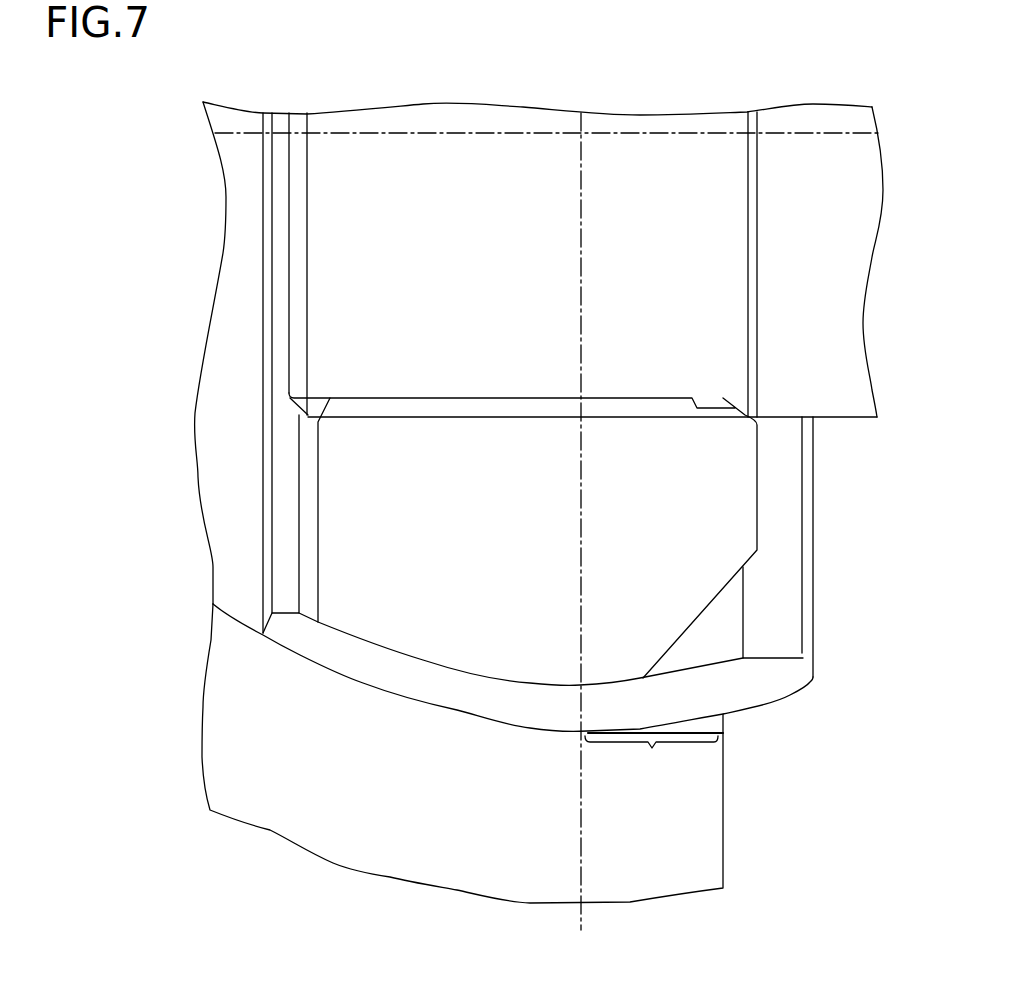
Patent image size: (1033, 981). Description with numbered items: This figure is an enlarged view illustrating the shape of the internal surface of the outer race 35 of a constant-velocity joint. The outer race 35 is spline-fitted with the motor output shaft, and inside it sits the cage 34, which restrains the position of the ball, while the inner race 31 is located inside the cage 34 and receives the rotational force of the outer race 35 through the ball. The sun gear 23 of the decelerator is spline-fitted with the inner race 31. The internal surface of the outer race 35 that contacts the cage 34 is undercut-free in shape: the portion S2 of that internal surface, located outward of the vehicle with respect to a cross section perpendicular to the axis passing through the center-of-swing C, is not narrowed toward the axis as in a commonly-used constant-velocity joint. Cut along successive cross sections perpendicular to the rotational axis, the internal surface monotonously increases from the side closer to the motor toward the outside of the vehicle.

The sun gear 23 is at (840, 310).
The inner race 31 is at (738, 543).
The cage 34 is at (783, 682).
The outer race 35 is at (340, 847).
The portion of the internal surface S2 is at (652, 748).
The center-of-swing C is at (586, 142).